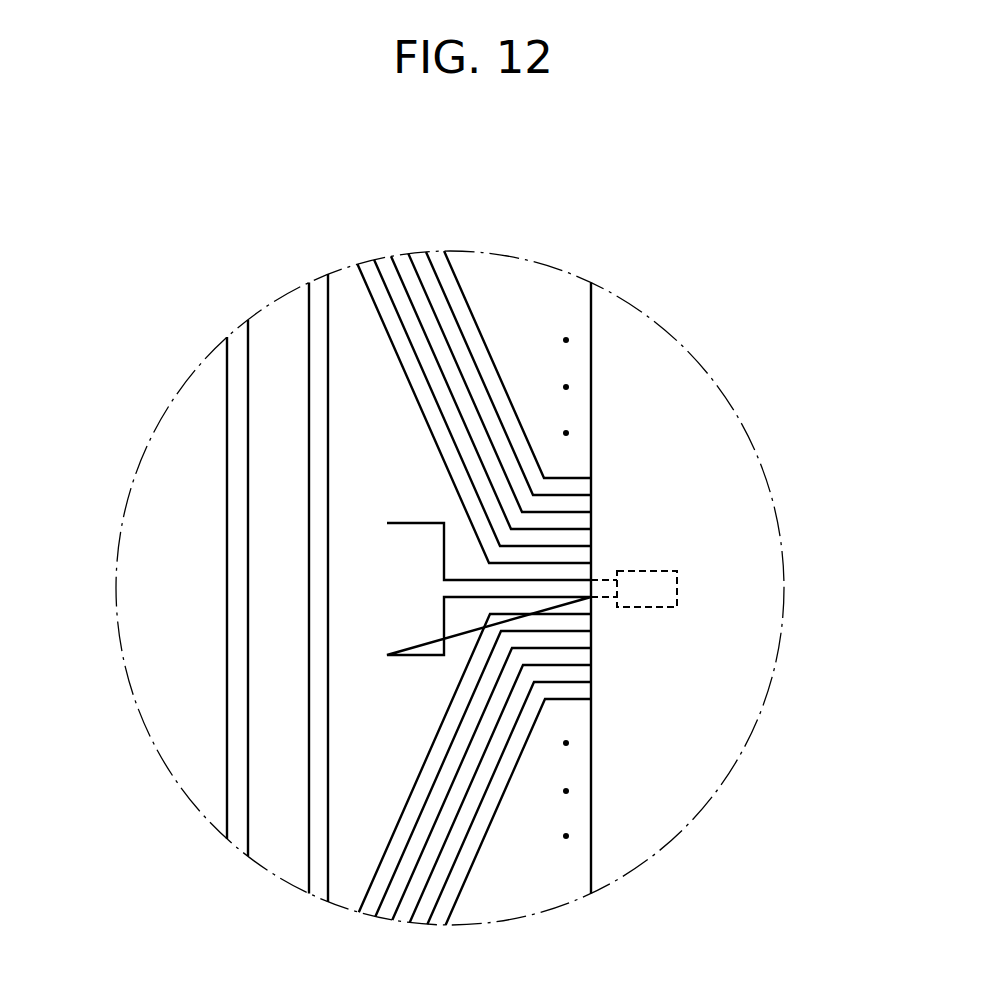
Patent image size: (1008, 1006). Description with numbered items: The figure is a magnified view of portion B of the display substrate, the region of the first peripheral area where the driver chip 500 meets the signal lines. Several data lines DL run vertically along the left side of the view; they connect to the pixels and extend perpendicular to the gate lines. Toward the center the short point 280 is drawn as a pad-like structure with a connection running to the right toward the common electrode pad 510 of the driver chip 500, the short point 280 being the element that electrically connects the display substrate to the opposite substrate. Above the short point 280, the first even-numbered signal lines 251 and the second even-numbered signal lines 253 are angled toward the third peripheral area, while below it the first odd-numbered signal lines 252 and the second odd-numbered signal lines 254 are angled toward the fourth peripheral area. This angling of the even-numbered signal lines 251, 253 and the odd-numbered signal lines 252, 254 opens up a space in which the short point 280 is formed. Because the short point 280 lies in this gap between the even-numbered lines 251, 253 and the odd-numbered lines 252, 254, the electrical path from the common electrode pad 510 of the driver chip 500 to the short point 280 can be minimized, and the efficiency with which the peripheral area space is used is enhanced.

The portion B is at (620, 298).
The driver chip 500 is at (720, 694).
The data line DL is at (315, 365).
The second even-numbered signal line 253 is at (366, 278).
The first even-numbered signal line 251 is at (403, 265).
The second odd-numbered signal line 254 is at (366, 898).
The first odd-numbered signal line 252 is at (405, 912).
The short point 280 is at (403, 587).
The common electrode pad 510 is at (677, 587).